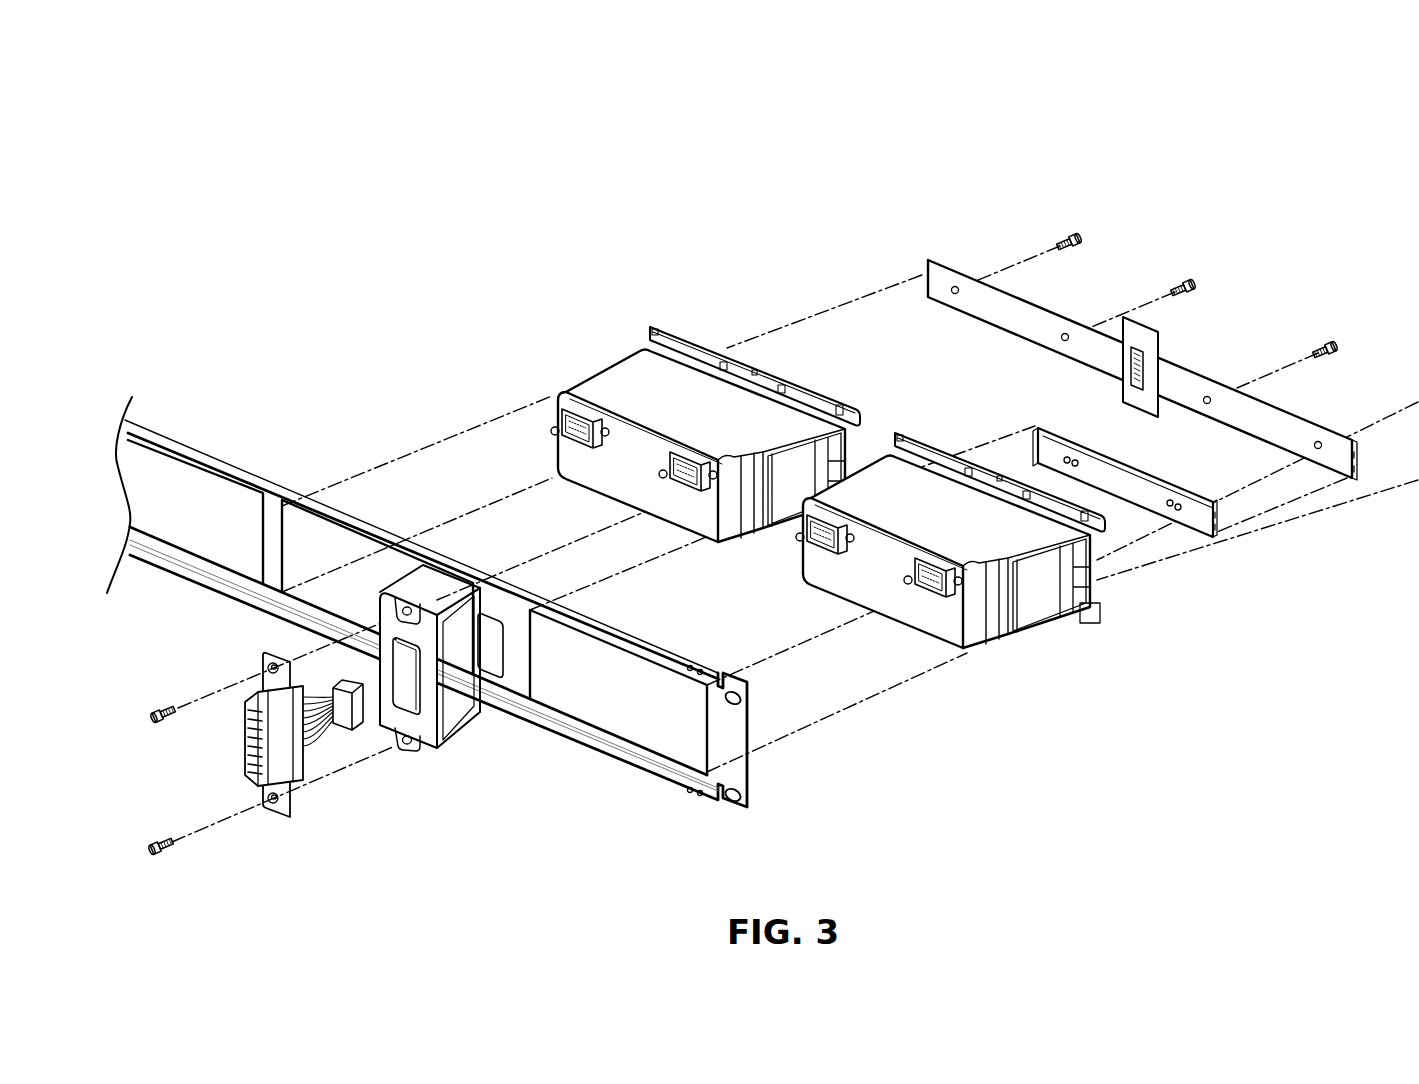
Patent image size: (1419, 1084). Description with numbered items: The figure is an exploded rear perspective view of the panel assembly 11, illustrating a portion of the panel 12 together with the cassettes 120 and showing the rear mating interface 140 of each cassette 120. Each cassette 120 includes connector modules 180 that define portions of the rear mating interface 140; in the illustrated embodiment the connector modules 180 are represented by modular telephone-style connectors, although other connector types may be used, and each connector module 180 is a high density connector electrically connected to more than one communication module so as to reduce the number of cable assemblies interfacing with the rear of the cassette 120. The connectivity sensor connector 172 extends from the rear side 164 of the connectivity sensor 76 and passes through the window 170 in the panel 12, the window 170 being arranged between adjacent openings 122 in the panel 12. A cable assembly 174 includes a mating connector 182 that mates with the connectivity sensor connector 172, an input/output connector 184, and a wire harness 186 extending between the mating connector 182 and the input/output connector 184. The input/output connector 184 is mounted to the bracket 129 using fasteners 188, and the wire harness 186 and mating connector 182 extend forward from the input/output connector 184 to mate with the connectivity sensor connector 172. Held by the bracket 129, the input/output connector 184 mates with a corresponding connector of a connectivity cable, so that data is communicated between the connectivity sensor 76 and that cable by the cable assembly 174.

The panel assembly 11 is at (768, 167).
The panel 12 is at (737, 772).
The connectivity sensor 76 is at (1151, 328).
The cassette 120 is at (997, 628).
The opening 122 is at (638, 706).
The bracket 129 is at (470, 733).
The rear mating interface 140 is at (946, 595).
The rear side 164 is at (1218, 385).
The window 170 is at (506, 647).
The connectivity sensor connector 172 is at (1128, 368).
The cable assembly 174 is at (227, 672).
The connector module 180 is at (562, 413).
The mating connector 182 is at (365, 728).
The input/output (I/O) connector 184 is at (290, 790).
The wire harness 186 is at (328, 737).
The fastener 188 is at (160, 853).